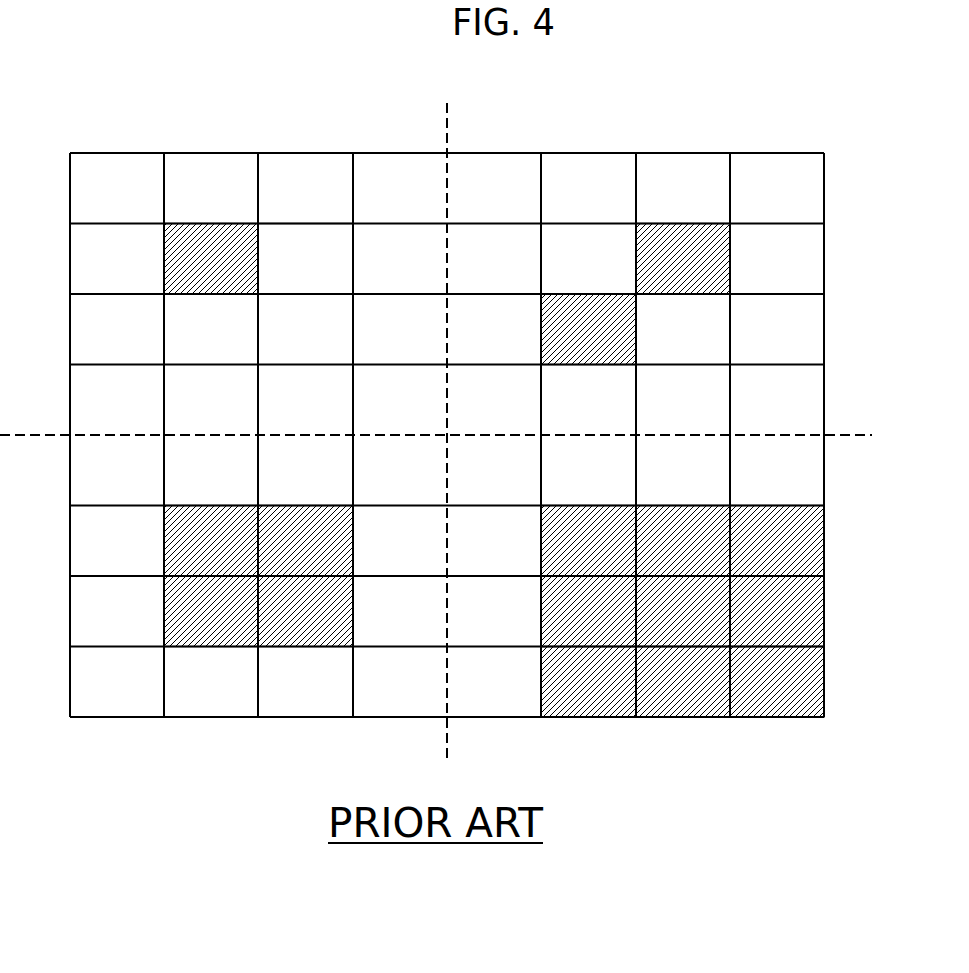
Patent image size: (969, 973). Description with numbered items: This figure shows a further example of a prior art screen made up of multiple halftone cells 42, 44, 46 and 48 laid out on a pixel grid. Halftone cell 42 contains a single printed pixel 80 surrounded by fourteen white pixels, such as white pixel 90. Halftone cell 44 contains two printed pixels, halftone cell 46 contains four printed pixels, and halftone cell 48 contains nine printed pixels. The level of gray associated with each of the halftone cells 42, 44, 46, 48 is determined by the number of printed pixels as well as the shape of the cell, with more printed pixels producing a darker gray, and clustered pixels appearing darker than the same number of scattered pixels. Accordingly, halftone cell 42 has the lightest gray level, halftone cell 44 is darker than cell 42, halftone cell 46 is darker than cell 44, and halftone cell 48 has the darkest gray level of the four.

The halftone cell 42 is at (117, 130).
The halftone cell 44 is at (683, 125).
The halftone cell 46 is at (142, 744).
The halftone cell 48 is at (683, 743).
The printed pixel 80 is at (212, 240).
The white pixel 90 is at (305, 175).